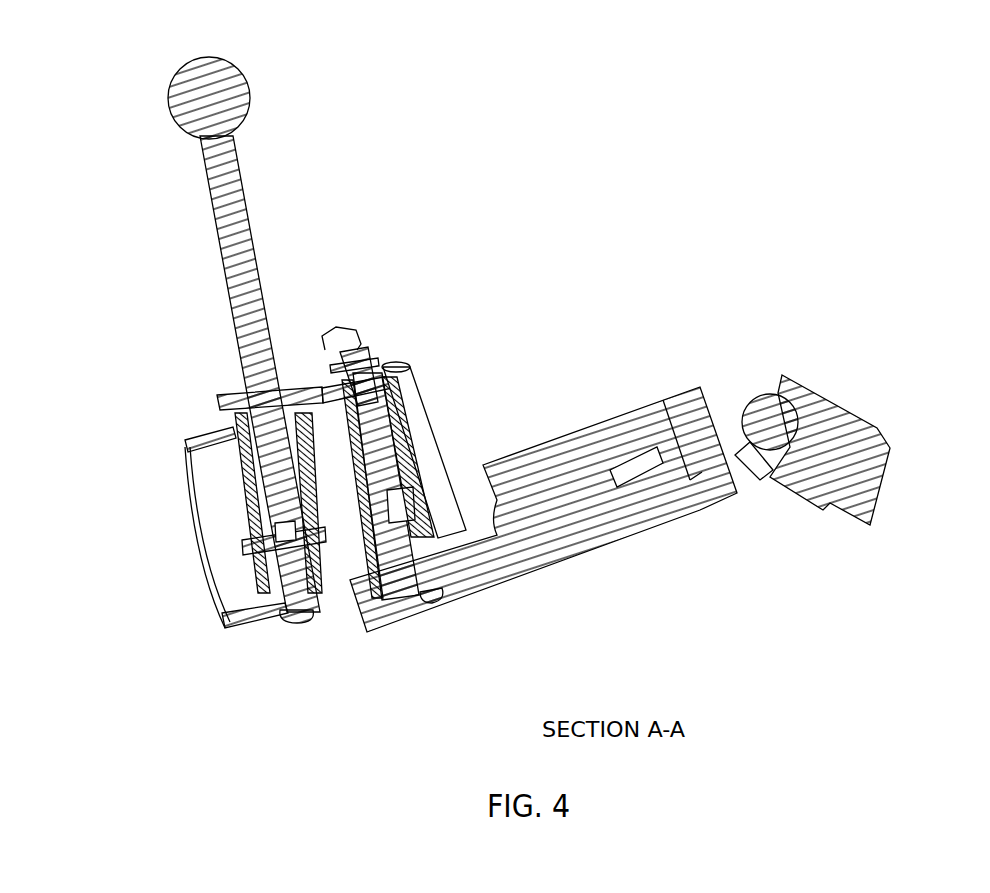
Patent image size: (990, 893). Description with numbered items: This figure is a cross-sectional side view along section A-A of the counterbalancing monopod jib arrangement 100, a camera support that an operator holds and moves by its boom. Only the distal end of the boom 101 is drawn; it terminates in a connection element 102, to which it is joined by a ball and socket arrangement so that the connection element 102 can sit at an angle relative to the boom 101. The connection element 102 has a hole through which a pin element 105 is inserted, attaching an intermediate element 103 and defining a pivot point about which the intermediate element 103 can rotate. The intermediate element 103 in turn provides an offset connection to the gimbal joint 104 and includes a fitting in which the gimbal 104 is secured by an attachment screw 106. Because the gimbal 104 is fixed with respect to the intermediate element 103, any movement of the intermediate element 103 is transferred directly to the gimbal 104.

The counterbalancing monopod jib arrangement 100 is at (660, 173).
The boom 101 is at (848, 405).
The connection element 102 is at (548, 436).
The intermediate element 103 is at (425, 408).
The gimbal joint 104 is at (272, 105).
The pin element 105 is at (332, 327).
The attachment screw 106 is at (295, 620).